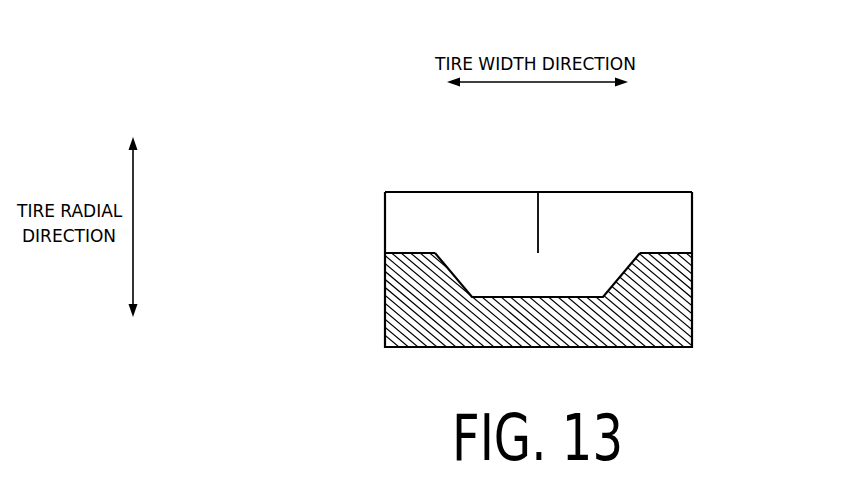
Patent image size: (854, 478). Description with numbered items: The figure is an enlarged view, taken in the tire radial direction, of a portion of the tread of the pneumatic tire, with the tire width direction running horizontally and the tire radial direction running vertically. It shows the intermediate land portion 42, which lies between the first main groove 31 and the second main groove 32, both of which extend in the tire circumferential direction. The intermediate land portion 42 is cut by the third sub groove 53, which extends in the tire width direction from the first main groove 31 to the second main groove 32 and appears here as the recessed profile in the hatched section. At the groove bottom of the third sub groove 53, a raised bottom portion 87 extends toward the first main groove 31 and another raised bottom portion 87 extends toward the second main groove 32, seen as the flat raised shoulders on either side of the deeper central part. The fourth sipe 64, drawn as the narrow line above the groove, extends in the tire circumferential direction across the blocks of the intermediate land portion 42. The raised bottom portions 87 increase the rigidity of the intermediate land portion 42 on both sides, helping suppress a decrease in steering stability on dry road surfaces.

The raised bottom portion 87 is at (412, 253).
The intermediate land portion 42 is at (448, 192).
The fourth sipe 64 is at (538, 215).
The third sub groove 53 is at (587, 215).
The second main groove 32 is at (337, 322).
The first main groove 31 is at (780, 322).